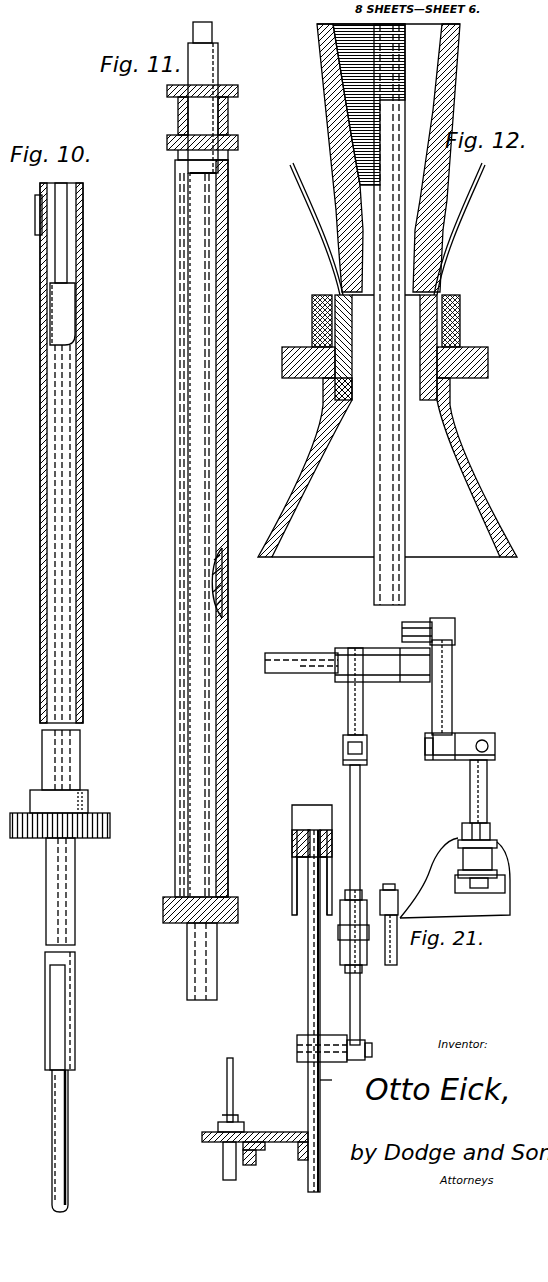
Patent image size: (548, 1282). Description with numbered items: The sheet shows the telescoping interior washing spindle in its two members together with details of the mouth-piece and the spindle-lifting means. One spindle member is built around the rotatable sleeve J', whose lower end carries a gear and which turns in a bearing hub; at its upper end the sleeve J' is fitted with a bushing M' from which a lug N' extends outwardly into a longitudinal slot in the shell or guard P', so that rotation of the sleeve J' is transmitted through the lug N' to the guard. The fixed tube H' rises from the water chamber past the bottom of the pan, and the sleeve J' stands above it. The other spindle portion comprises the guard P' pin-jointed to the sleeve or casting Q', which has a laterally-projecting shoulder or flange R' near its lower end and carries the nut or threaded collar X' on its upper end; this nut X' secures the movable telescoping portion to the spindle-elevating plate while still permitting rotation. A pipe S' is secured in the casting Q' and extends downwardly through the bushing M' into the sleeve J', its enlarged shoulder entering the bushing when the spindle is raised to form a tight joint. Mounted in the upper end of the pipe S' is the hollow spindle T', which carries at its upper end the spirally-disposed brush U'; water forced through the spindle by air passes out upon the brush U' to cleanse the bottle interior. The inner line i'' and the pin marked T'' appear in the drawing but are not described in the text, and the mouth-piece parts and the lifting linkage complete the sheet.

In FIG. 10, the bushing M' is at (46, 453).
In FIG. 10, the lug N' is at (25, 233).
In FIG. 10, the rotatable sleeve J' is at (66, 771).
In FIG. 10, the tube H' is at (39, 954).
In FIG. 10, the hollow spindle T' is at (27, 1137).
In FIG. 11, the hollow spindle T' is at (216, 97).
In FIG. 12, the hollow spindle T' is at (402, 314).
In FIG. 11, the nut or threaded collar X' is at (178, 94).
In FIG. 11, the sleeve or casting Q' is at (188, 116).
In FIG. 11, the shoulder or flange R' is at (186, 147).
In FIG. 11, the shell or guard P' is at (207, 580).
In FIG. 11, the pipe S' is at (220, 183).
In FIG. 21, the pipe S' is at (217, 1118).
In FIG. 11, the inner rod i'' is at (162, 535).
In FIG. 12, the spirally-disposed brush U' is at (376, 158).
In FIG. 21, the pin T'' is at (209, 1090).